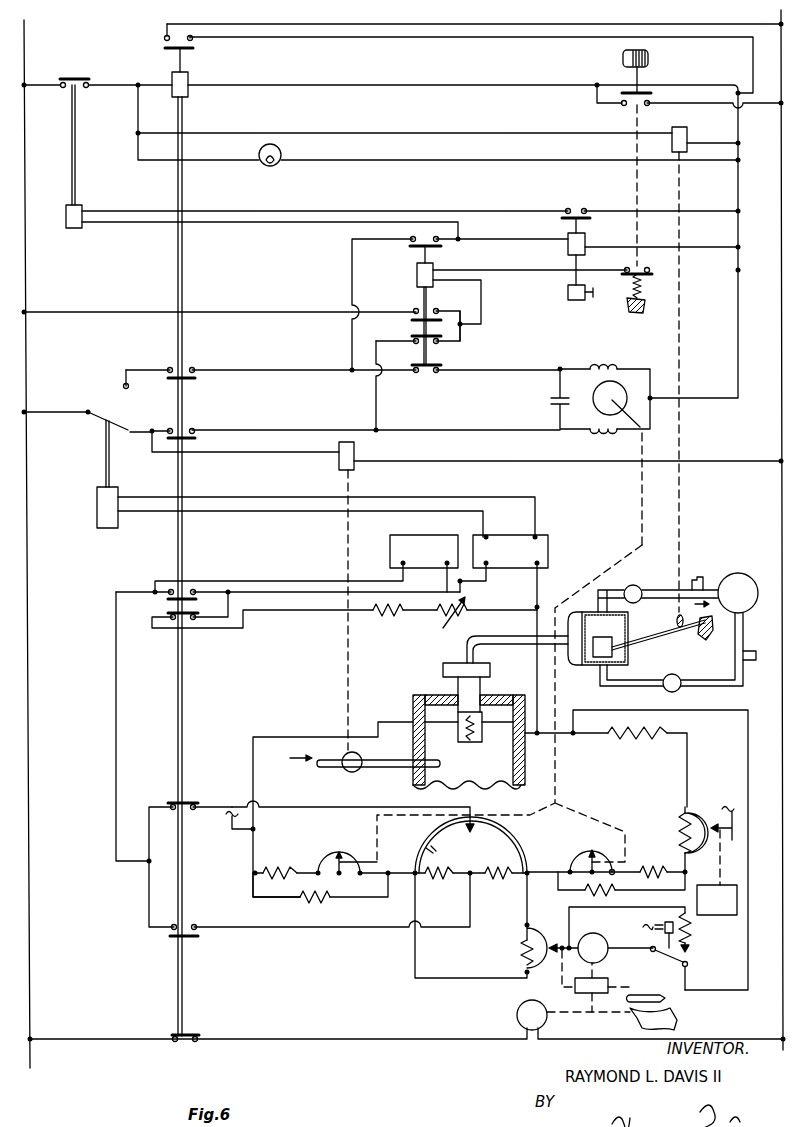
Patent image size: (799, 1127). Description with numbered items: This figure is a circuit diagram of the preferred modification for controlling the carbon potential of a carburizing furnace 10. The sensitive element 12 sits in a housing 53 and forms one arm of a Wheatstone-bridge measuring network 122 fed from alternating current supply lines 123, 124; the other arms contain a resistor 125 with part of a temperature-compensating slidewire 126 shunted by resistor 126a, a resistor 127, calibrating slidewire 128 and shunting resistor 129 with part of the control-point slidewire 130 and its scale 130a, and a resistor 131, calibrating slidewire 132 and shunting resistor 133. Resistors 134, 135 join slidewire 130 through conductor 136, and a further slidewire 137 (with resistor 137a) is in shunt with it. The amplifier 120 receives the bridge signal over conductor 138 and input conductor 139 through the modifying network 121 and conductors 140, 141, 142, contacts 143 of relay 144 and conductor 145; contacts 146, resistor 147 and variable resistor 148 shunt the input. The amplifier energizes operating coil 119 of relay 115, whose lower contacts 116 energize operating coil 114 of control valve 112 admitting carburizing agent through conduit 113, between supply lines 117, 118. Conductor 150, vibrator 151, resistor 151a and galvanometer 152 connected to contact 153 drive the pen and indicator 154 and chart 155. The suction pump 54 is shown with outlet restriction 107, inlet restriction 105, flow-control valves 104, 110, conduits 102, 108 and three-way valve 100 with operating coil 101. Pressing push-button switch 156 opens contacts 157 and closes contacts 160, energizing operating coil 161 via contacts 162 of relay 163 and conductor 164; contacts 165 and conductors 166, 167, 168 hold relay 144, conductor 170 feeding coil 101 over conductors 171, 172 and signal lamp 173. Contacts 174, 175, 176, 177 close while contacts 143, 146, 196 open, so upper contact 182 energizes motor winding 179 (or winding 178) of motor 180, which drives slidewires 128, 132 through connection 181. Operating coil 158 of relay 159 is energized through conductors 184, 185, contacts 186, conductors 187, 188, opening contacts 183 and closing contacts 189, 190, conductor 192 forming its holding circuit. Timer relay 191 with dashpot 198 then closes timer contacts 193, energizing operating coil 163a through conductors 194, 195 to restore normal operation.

The carburizing furnace 10 is at (503, 776).
The sensitive element 12 is at (463, 741).
The housing 53 is at (443, 668).
The suction pump 54 is at (735, 572).
The three-way valve 100 is at (628, 652).
The operating coil 101 is at (688, 130).
The conduit 102 is at (610, 590).
The flow-control valve 104 is at (650, 572).
The inlet restriction 105 is at (695, 575).
The outlet restriction 107 is at (750, 660).
The pipe or conduit 108 is at (618, 685).
The flow-control valve 110 is at (677, 688).
The control valve 112 is at (347, 770).
The conduit 113 is at (395, 766).
The operating coil 114 is at (338, 462).
The relay 115 is at (104, 456).
The lower contacts 116 is at (129, 437).
The supply line 117 is at (26, 47).
The supply line 118 is at (782, 198).
The operating coil 119 is at (96, 512).
The amplifier 120 is at (502, 537).
The modifying network 121 is at (390, 551).
The measuring network 122 is at (645, 801).
The alternating current supply line 123 is at (230, 838).
The alternating current supply line 124 is at (727, 806).
The resistor 125 is at (657, 739).
The temperature-compensating slidewire 126 is at (697, 848).
The shunting resistor 126a is at (680, 828).
The resistor 127 is at (283, 858).
The calibrating slidewire 128 is at (350, 841).
The shunting resistor 129 is at (313, 898).
The slidewire 130 is at (522, 838).
The scale 130a is at (427, 850).
The resistor 131 is at (653, 868).
The calibrating slidewire 132 is at (578, 862).
The shunting resistor 133 is at (592, 894).
The resistor 134 is at (445, 878).
The resistor 135 is at (505, 880).
The conductor 136 is at (348, 928).
The slidewire 137 is at (526, 932).
The resistor 137a is at (522, 953).
The conductor 138 is at (529, 684).
The input conductor 139 is at (471, 582).
The conductor 140 is at (320, 578).
The conductor 141 is at (115, 705).
The conductor 142 is at (160, 806).
The contacts 143 is at (185, 810).
The relay 144 is at (228, 115).
The conductor 145 is at (318, 808).
The contacts 146 is at (177, 624).
The resistor 147 is at (390, 616).
The variable resistor 148 is at (471, 623).
The conductor 150 is at (694, 712).
The vibrator 151 is at (690, 958).
The resistor 151a is at (688, 931).
The galvanometer 152 is at (639, 933).
The contact 153 is at (553, 942).
The pen and indicator 154 is at (648, 998).
The chart 155 is at (678, 1021).
The push-button switch 156 is at (622, 59).
The contacts 157 is at (622, 281).
The operating coil 158 is at (417, 274).
The relay 159 is at (429, 352).
The contacts 160 is at (633, 106).
The operating coil 161 is at (172, 73).
The contacts 162 is at (71, 88).
The relay 163 is at (128, 179).
The operating coil 163a is at (76, 229).
The conductor 164 is at (768, 105).
The contacts 165 is at (193, 43).
The conductor 166 is at (674, 84).
The conductor 167 is at (426, 38).
The conductor 168 is at (355, 26).
The conductor 170 is at (737, 180).
The conductor 171 is at (137, 104).
The conductor 172 is at (341, 133).
The signal lamp 173 is at (273, 167).
The contacts 174 is at (185, 368).
The contacts 175 is at (182, 427).
The contacts 176 is at (188, 586).
The contacts 177 is at (189, 925).
The motor winding 178 is at (604, 435).
The motor winding 179 is at (605, 364).
The motor 180 is at (623, 380).
The broken-line connection 181 is at (641, 488).
The upper contact 182 is at (124, 384).
The normally closed contacts 183 is at (426, 373).
The conductor 184 is at (283, 427).
The conductor 185 is at (375, 396).
The contacts 186 is at (415, 338).
The conductor 187 is at (462, 330).
The conductor 188 is at (482, 307).
The contact 189 is at (425, 236).
The contacts 190 is at (428, 312).
The timer relay 191 is at (622, 241).
The conductor 192 is at (223, 308).
The timer contacts 193 is at (572, 208).
The conductor 194 is at (350, 278).
The conductor 195 is at (290, 224).
The contacts 196 is at (187, 1046).
The dashpot 198 is at (573, 301).